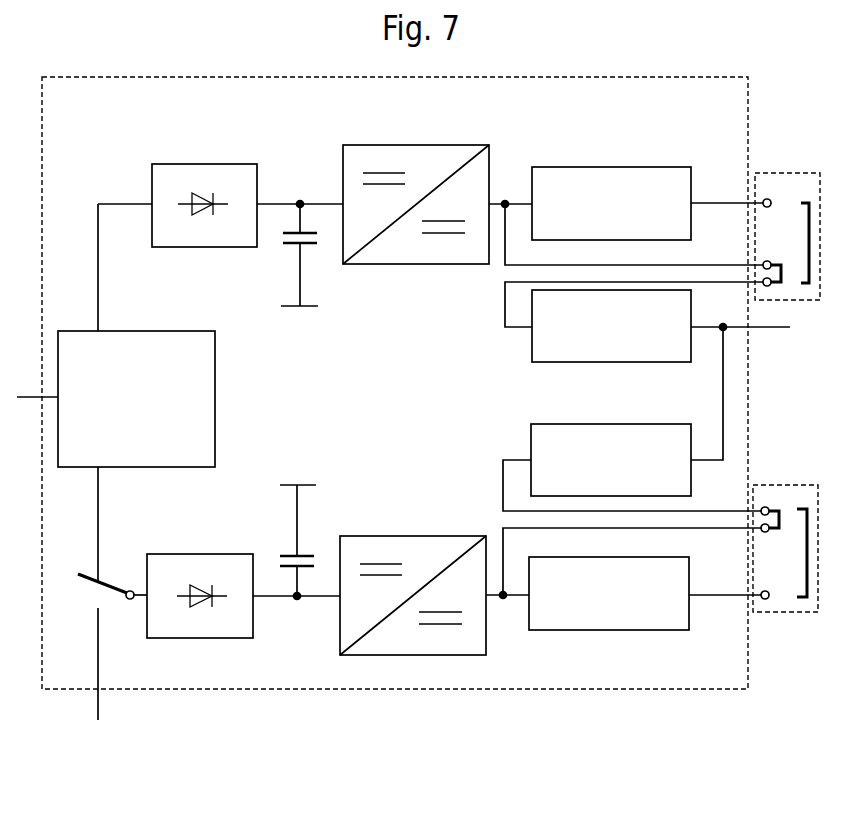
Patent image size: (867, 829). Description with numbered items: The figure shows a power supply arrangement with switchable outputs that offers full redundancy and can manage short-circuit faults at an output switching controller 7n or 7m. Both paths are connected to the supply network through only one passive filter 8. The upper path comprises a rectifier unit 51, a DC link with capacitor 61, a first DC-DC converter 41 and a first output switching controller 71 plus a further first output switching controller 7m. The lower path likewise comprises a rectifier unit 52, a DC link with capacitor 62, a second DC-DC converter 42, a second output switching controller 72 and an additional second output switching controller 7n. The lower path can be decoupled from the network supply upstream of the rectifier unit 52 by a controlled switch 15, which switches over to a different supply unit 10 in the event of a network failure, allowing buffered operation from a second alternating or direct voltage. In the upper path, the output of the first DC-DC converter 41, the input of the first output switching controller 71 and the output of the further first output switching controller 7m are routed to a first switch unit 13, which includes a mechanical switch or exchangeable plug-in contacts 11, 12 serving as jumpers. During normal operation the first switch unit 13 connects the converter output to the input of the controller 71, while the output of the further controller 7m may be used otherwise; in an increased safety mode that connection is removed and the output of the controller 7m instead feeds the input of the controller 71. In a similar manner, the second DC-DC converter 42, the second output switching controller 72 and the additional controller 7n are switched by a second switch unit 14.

The passive filter 8 is at (150, 331).
The supply unit 10 is at (100, 681).
The exchangeable plug-in contact 11 is at (778, 262).
The exchangeable plug-in contact 12 is at (805, 285).
The first switch unit 13 is at (785, 173).
The second switch unit 14 is at (785, 485).
The controlled switch 15 is at (102, 590).
The first DC-DC converter 41 is at (417, 145).
The second DC-DC converter 42 is at (414, 536).
The rectifier unit 51 is at (205, 164).
The rectifier unit 52 is at (205, 554).
The capacitor 61 is at (313, 244).
The capacitor 62 is at (293, 553).
The first output switching controller 71 is at (558, 362).
The second output switching controller 72 is at (630, 424).
The further first output switching controller 7m is at (615, 166).
The additional second output switching controller 7n is at (670, 631).